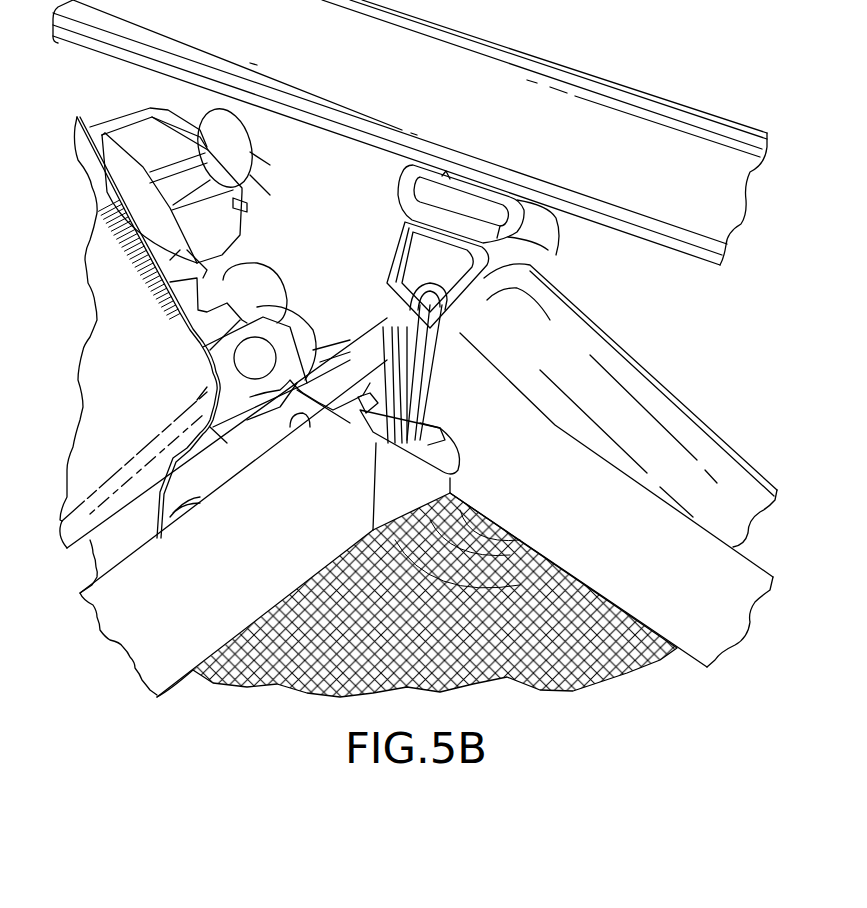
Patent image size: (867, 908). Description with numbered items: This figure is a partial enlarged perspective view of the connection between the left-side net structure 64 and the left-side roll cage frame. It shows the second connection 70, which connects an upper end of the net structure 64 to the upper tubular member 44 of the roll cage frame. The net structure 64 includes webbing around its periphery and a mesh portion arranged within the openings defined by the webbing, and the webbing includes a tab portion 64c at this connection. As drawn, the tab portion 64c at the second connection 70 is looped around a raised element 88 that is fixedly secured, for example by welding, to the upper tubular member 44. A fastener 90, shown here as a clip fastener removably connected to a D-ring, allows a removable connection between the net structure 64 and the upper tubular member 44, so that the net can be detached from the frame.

The upper tubular member 44 is at (457, 73).
The second connection 70 is at (382, 222).
The raised element 88 is at (520, 222).
The fastener 90 is at (450, 373).
The tab portion 64c is at (462, 334).
The net structure 64 is at (611, 643).